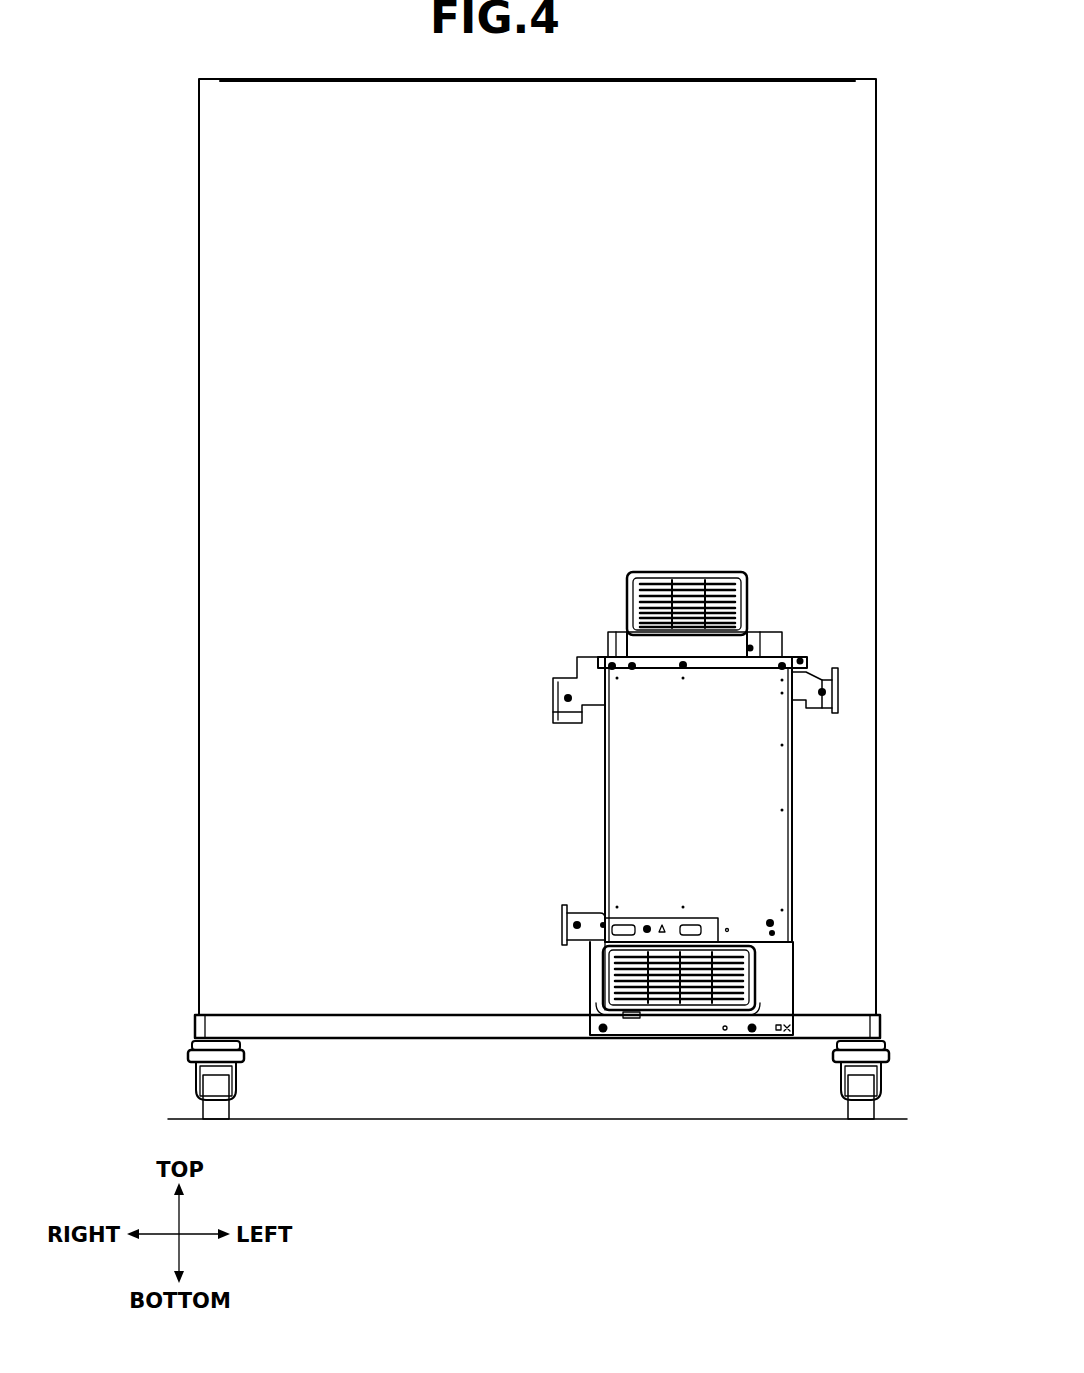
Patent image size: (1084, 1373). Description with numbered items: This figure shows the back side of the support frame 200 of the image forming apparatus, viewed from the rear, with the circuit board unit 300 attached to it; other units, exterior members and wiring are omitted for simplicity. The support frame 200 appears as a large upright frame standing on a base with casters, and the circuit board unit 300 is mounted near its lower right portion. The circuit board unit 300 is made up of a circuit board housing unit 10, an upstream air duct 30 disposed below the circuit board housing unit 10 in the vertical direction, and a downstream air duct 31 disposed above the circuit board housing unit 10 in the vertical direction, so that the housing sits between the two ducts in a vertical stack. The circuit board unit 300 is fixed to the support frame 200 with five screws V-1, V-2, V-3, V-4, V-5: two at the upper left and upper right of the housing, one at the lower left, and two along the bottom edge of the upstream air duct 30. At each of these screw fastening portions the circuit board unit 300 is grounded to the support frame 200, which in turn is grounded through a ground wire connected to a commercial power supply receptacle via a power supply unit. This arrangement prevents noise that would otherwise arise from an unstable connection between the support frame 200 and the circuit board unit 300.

The support frame 200 is at (857, 323).
The circuit board unit 300 is at (707, 839).
The circuit board housing unit 10 is at (528, 662).
The downstream air duct 31 is at (632, 573).
The upstream air duct 30 is at (608, 1005).
The screw V-1 is at (566, 694).
The screw V-2 is at (826, 692).
The screw V-3 is at (577, 930).
The screw V-4 is at (603, 1032).
The screw V-5 is at (752, 1032).